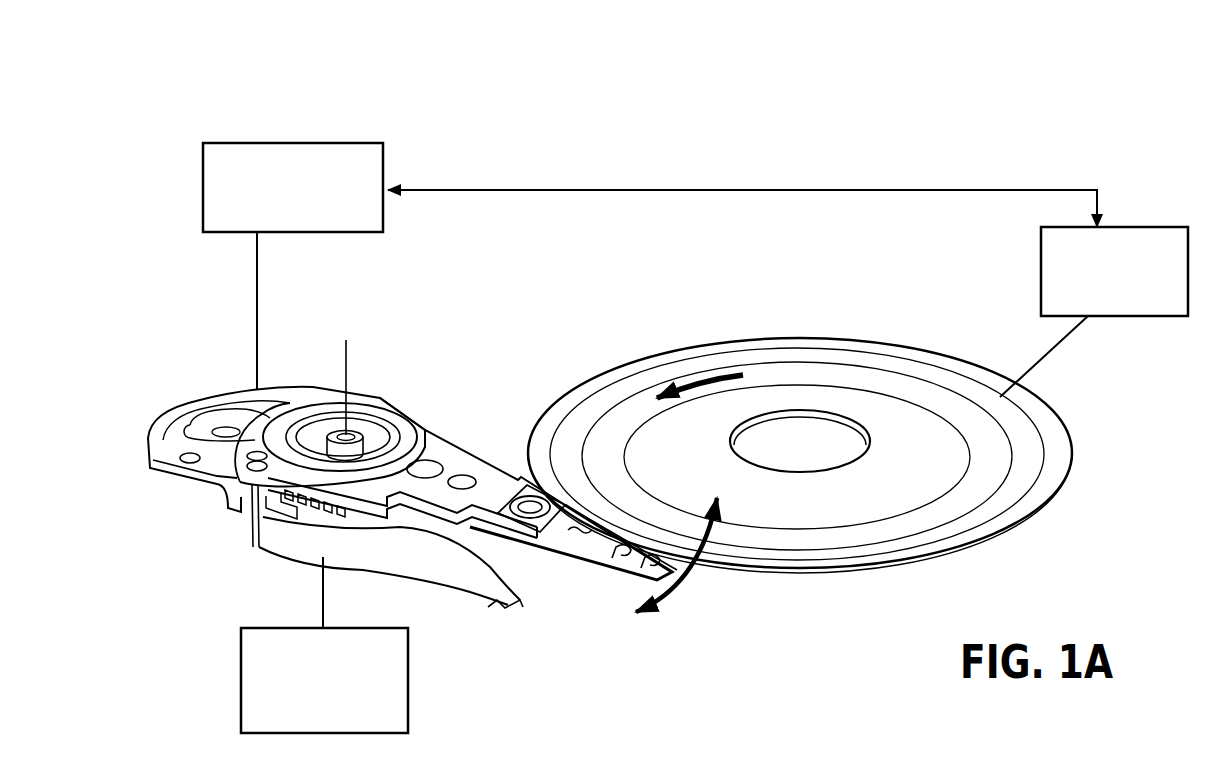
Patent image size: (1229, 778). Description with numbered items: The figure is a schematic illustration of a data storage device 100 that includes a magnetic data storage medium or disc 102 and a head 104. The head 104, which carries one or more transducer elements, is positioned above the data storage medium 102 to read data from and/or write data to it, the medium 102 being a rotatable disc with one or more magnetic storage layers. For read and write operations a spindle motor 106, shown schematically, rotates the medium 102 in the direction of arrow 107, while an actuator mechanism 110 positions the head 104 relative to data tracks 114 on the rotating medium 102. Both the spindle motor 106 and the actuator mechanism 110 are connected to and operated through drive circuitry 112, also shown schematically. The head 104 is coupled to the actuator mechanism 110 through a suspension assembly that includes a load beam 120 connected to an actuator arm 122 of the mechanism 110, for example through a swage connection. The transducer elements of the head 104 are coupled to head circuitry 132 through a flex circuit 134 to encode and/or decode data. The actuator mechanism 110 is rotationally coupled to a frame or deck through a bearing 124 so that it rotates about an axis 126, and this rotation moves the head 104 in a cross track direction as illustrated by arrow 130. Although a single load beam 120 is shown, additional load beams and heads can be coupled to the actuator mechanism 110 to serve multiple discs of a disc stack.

The data storage device 100 is at (977, 133).
The data storage medium 102 is at (930, 358).
The head 104 is at (677, 577).
The spindle motor 106 is at (1150, 227).
The arrow 107 is at (705, 380).
The actuator mechanism 110 is at (356, 421).
The drive circuitry 112 is at (380, 157).
The data tracks 114 is at (1017, 488).
The load beam 120 is at (578, 522).
The actuator arm 122 is at (475, 456).
The bearing 124 is at (343, 435).
The axis 126 is at (346, 366).
The arrow 130 is at (660, 544).
The head circuitry 132 is at (407, 677).
The flex circuit 134 is at (313, 550).